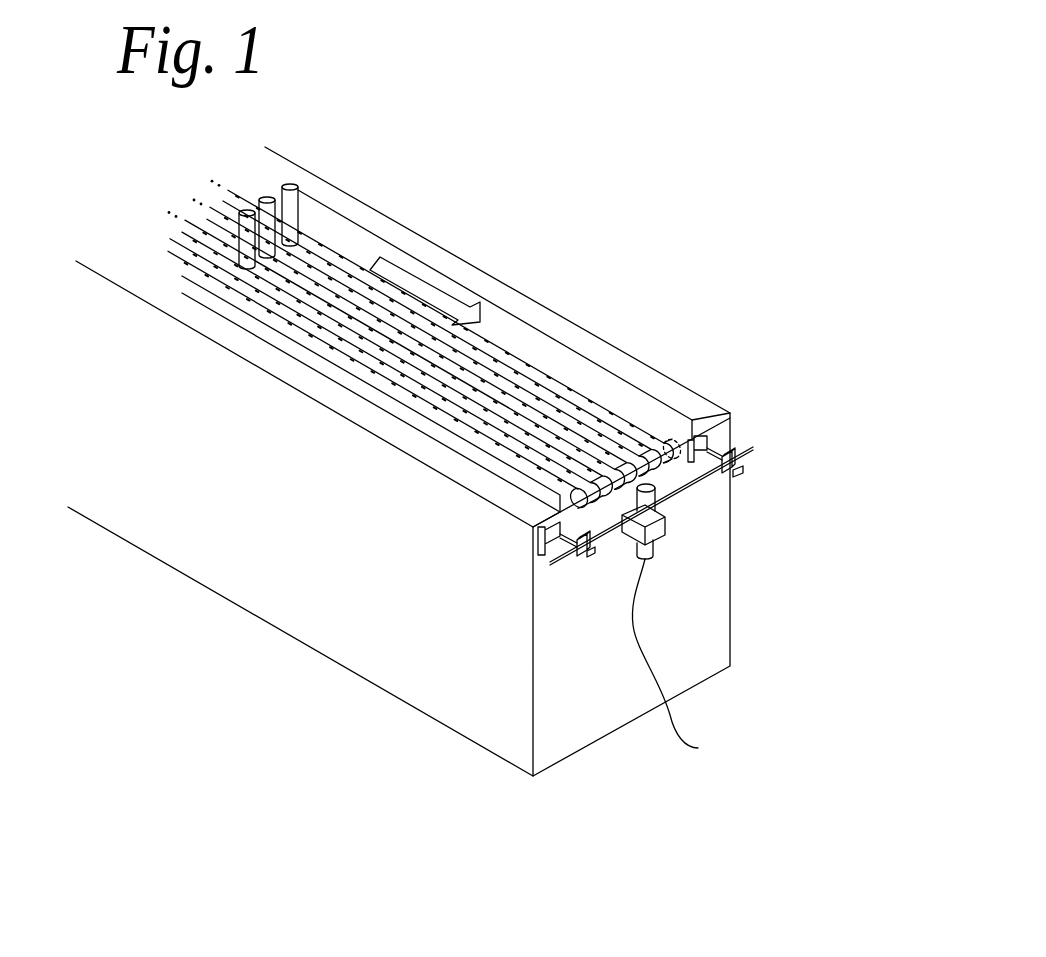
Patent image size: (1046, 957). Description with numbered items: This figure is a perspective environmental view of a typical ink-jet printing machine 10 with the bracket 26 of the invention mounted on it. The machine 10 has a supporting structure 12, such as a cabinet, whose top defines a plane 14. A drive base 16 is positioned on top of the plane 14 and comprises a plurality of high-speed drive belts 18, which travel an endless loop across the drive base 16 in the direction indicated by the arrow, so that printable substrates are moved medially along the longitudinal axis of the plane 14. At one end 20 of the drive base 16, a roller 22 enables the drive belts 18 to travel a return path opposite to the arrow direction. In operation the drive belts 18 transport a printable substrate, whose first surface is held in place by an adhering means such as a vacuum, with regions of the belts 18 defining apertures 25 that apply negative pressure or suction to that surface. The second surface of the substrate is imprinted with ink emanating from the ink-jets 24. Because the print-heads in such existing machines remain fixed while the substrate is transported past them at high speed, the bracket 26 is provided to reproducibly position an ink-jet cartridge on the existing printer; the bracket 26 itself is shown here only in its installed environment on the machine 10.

The ink-jet printing machine 10 is at (596, 287).
The supporting structure 12 is at (497, 726).
The plane 14 is at (342, 413).
The drive base 16 is at (608, 408).
The drive belts 18 is at (320, 252).
The end of the drive base 20 is at (547, 500).
The roller 22 is at (695, 432).
The ink-jets 24 is at (243, 211).
The apertures 25 is at (325, 327).
The bracket 26 is at (710, 500).